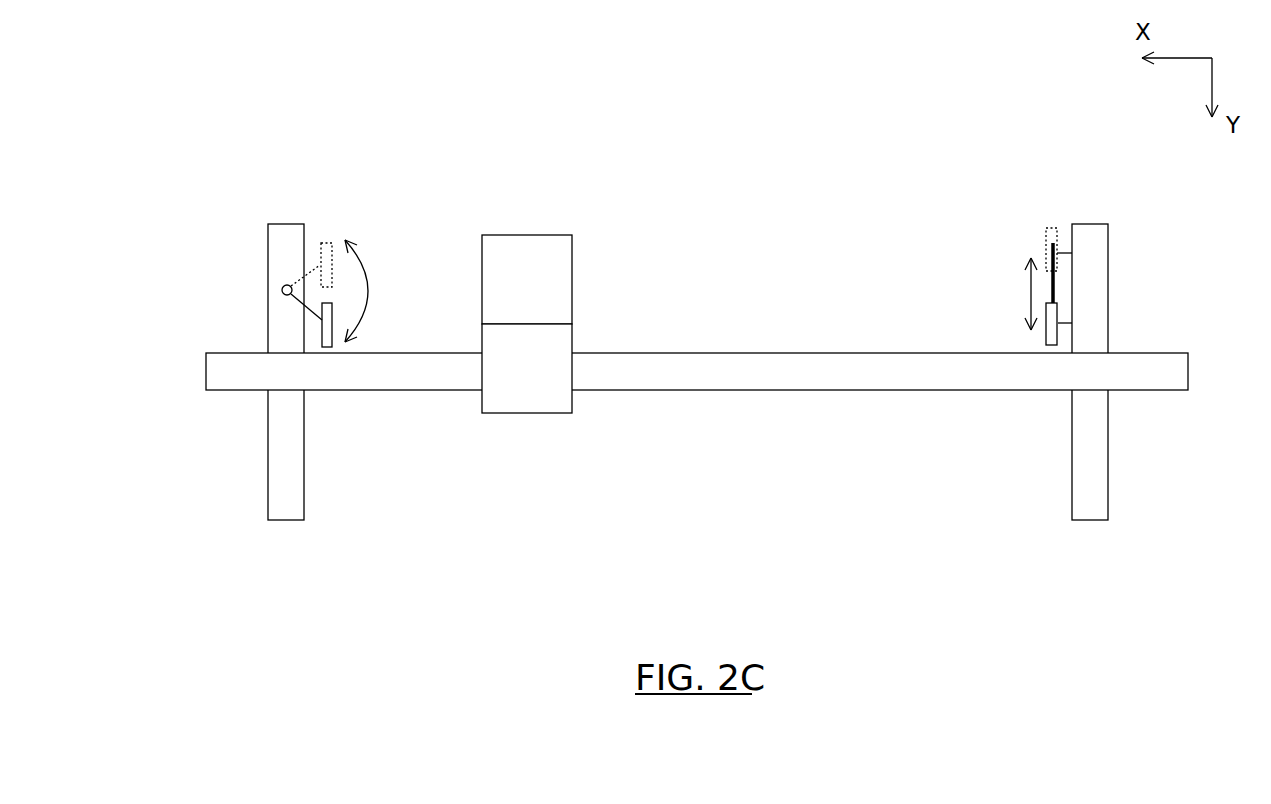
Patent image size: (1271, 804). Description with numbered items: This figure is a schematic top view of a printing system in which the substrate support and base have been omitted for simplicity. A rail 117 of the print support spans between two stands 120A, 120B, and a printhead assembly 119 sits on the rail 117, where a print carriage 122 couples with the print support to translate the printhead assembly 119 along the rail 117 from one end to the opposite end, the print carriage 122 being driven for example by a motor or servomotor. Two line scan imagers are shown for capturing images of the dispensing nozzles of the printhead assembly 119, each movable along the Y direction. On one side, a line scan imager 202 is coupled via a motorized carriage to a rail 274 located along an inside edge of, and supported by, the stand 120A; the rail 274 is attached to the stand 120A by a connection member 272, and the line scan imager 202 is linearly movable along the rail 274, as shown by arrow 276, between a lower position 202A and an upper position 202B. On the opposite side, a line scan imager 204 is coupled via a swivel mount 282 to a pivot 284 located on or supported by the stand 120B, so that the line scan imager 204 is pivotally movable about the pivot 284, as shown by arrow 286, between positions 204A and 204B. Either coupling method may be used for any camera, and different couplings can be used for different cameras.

The rail 117 is at (222, 372).
The printhead assembly 119 is at (565, 248).
The stand 120A is at (1085, 502).
The stand 120B is at (282, 504).
The print carriage 122 is at (518, 407).
The line scan imager 202 is at (962, 309).
The position 202A is at (1047, 332).
The position 202B is at (1050, 245).
The line scan imager 204 is at (407, 299).
The position 204A is at (328, 347).
The position 204B is at (328, 243).
The connection member 272 is at (1064, 325).
The rail 274 is at (1055, 282).
The arrow 276 is at (1005, 294).
The swivel mount 282 is at (292, 297).
The pivot 284 is at (282, 286).
The arrow 286 is at (381, 291).